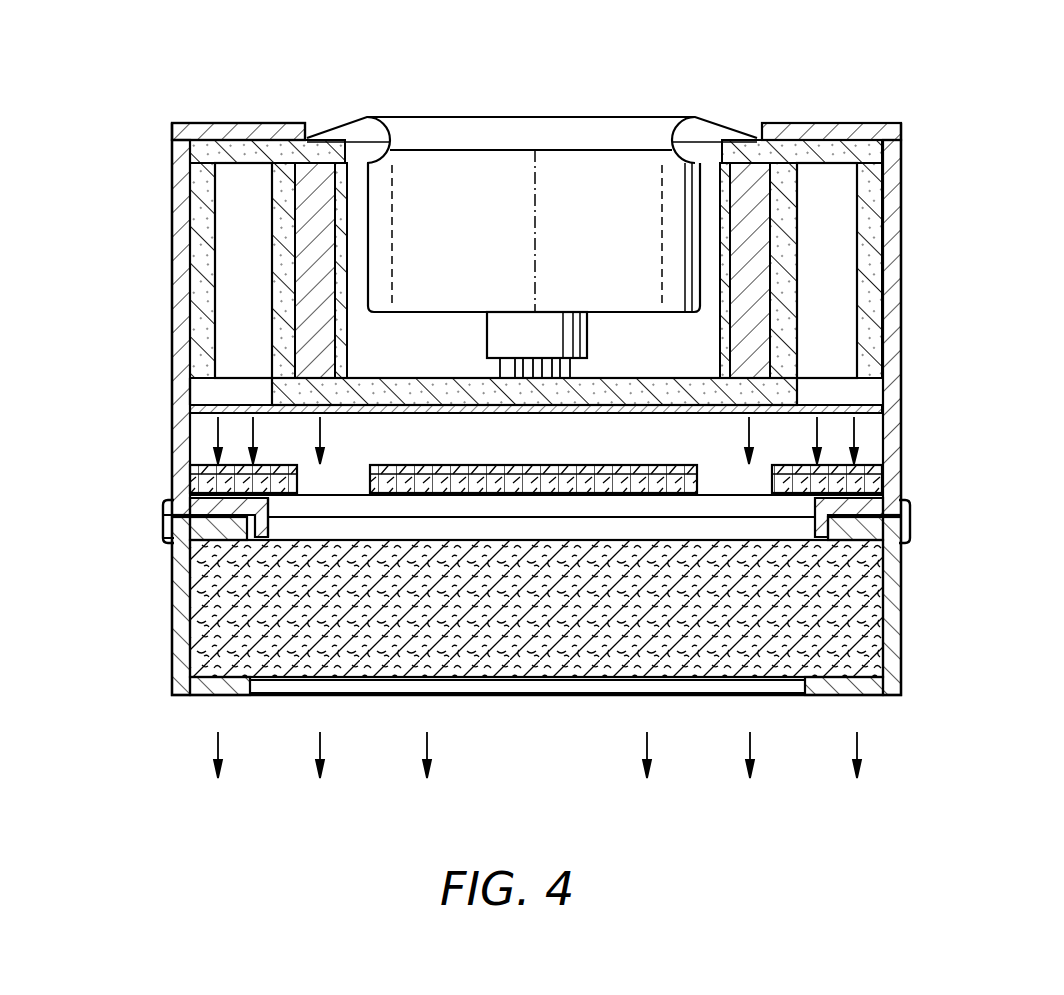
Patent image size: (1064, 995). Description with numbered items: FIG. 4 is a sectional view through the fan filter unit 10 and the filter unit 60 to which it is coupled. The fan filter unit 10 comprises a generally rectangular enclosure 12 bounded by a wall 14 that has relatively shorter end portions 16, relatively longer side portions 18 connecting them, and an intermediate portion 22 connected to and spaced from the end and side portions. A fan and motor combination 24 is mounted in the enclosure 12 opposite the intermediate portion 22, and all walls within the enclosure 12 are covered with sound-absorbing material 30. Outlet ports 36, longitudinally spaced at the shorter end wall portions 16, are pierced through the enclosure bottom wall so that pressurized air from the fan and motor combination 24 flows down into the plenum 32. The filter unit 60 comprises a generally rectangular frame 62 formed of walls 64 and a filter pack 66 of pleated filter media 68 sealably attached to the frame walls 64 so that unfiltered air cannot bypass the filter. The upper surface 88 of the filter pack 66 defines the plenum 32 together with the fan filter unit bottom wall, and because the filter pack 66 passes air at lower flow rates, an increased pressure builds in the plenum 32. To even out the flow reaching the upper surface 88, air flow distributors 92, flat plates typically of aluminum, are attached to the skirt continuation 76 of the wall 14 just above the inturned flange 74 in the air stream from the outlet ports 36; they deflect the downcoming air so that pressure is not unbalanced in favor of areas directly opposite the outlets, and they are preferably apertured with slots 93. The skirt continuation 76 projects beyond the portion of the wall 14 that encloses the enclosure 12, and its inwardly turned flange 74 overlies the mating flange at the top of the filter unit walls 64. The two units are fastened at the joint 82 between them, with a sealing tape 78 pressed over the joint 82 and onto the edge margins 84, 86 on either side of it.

The fan filter unit 10 is at (323, 92).
The enclosure 12 is at (901, 212).
The wall 14 is at (178, 262).
The end portions 16 is at (173, 190).
The side portions 18 is at (901, 350).
The intermediate portion 22 is at (901, 500).
The fan and motor combination 24 is at (603, 236).
The sound-absorbing material 30 is at (855, 200).
The plenum 32 is at (569, 451).
The outlet ports 36 is at (238, 350).
The filter unit 60 is at (146, 621).
The frame 62 is at (178, 650).
The walls 64 is at (903, 620).
The filter pack 66 is at (532, 660).
The filter media 68 is at (375, 650).
The flange 74 is at (288, 520).
The skirt continuation 76 is at (190, 235).
The sealing tape 78 is at (165, 522).
The joint 82 is at (174, 498).
The edge margin 84 is at (165, 500).
The edge margin 86 is at (167, 545).
The upper surface 88 is at (625, 530).
The air flow distributors 92 is at (286, 470).
The slots 93 is at (205, 464).